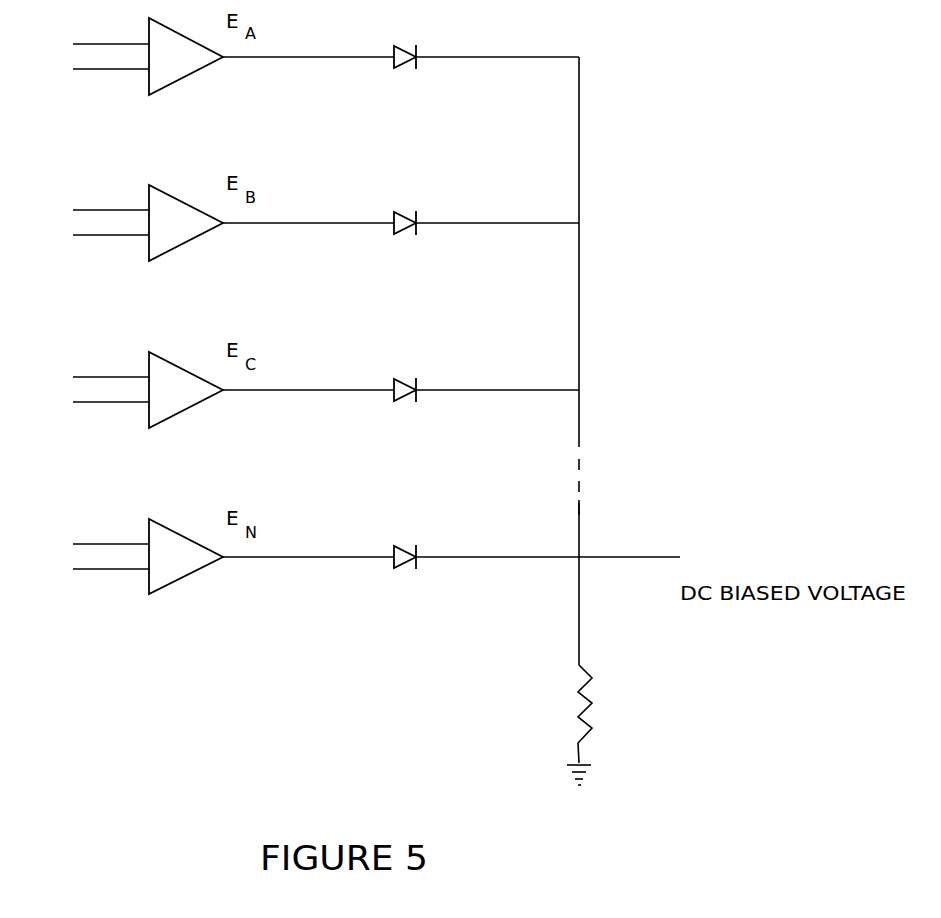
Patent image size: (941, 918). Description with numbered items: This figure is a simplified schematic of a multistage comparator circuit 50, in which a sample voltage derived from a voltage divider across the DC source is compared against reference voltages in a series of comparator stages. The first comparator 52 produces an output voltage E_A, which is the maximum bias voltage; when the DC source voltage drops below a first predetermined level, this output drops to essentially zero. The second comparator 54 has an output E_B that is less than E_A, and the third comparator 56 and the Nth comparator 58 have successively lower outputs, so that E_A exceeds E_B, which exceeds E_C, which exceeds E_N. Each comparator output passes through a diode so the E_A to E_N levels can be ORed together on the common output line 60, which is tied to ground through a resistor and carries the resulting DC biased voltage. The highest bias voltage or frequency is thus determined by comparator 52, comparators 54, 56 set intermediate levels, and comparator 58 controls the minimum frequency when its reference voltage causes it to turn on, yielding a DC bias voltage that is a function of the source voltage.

The first comparator 52 is at (187, 68).
The second comparator 54 is at (187, 234).
The third comparator 56 is at (187, 401).
The Nth comparator 58 is at (187, 568).
The multistage comparator circuit 50 is at (310, 575).
The output line 60 is at (620, 314).